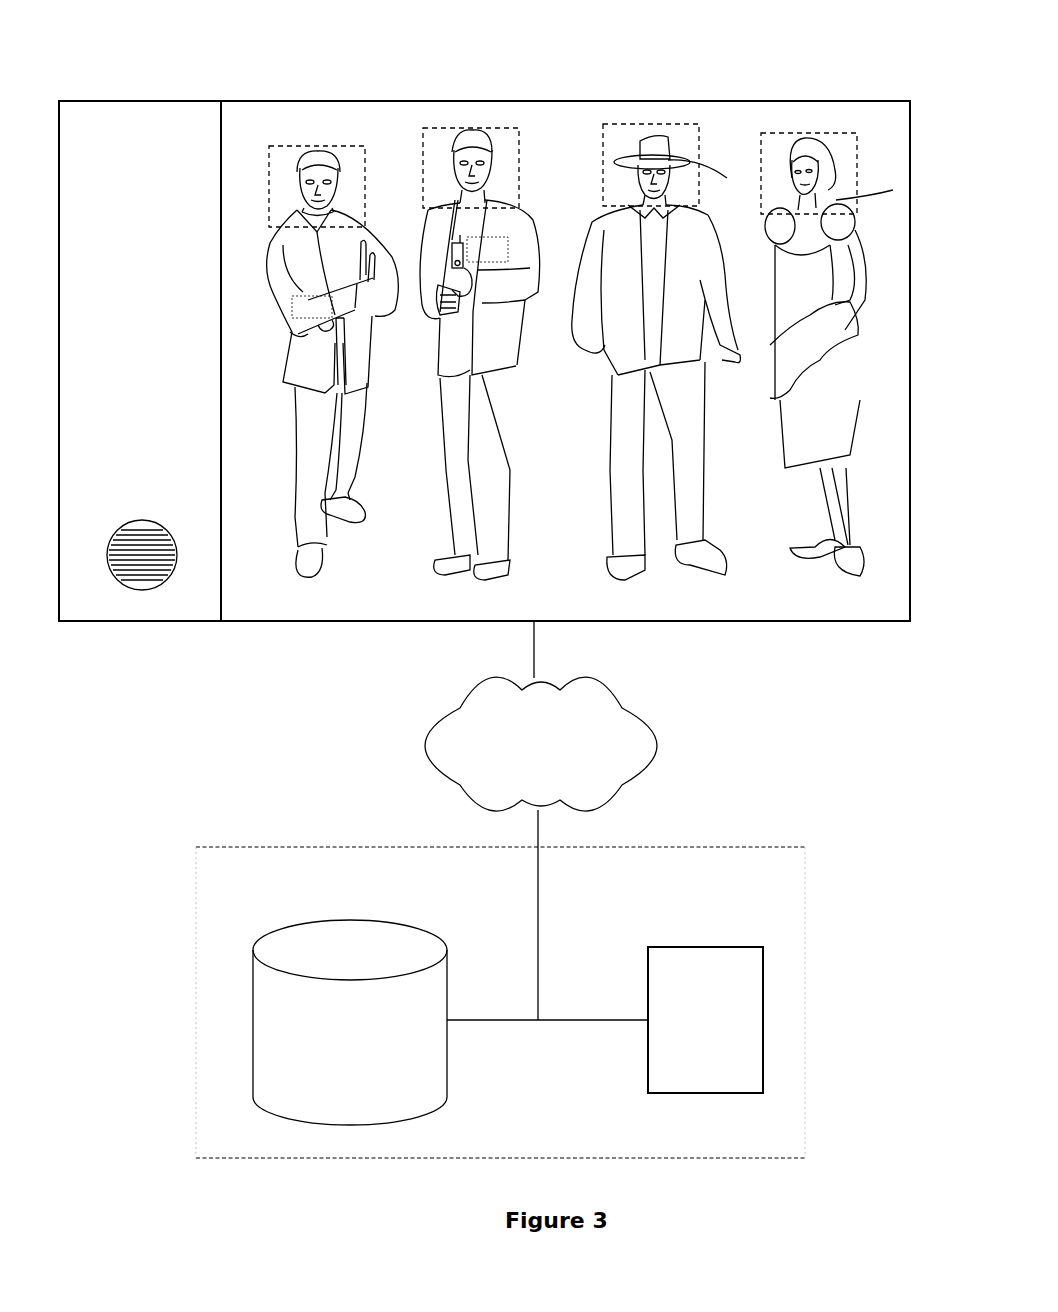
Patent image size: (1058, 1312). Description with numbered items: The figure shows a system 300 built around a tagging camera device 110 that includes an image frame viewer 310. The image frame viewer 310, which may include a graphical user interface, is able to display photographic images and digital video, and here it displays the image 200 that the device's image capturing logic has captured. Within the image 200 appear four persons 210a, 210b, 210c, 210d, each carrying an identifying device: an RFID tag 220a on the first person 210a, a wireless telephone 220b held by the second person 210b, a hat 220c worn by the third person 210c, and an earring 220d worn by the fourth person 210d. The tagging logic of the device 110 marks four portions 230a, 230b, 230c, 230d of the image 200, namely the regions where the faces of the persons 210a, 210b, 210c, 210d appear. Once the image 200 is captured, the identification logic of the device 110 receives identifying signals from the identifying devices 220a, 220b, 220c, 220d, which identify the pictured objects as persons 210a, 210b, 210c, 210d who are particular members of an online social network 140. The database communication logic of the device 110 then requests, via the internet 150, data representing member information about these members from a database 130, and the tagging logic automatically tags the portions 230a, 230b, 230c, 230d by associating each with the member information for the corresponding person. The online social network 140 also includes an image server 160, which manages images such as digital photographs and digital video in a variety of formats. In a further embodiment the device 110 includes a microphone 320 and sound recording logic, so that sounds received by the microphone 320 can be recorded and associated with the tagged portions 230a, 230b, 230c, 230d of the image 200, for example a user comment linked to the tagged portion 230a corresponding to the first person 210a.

The system 300 is at (533, 82).
The tagging camera device 110 is at (121, 172).
The microphone 320 is at (121, 522).
The image 200 is at (345, 604).
The image frame viewer 310 is at (808, 624).
The first person 210a is at (300, 387).
The second person 210b is at (445, 405).
The third person 210c is at (610, 378).
The fourth person 210d is at (782, 428).
The tagged portion 230a is at (268, 182).
The tagged portion 230b is at (422, 182).
The tagged portion 230c is at (602, 165).
The tagged portion 230d is at (762, 172).
The RFID tag 220a is at (312, 307).
The wireless telephone 220b is at (488, 249).
The hat 220c is at (716, 176).
The earring 220d is at (895, 178).
The internet 150 is at (523, 770).
The online social network 140 is at (716, 847).
The database 130 is at (332, 1069).
The image server 160 is at (687, 1049).